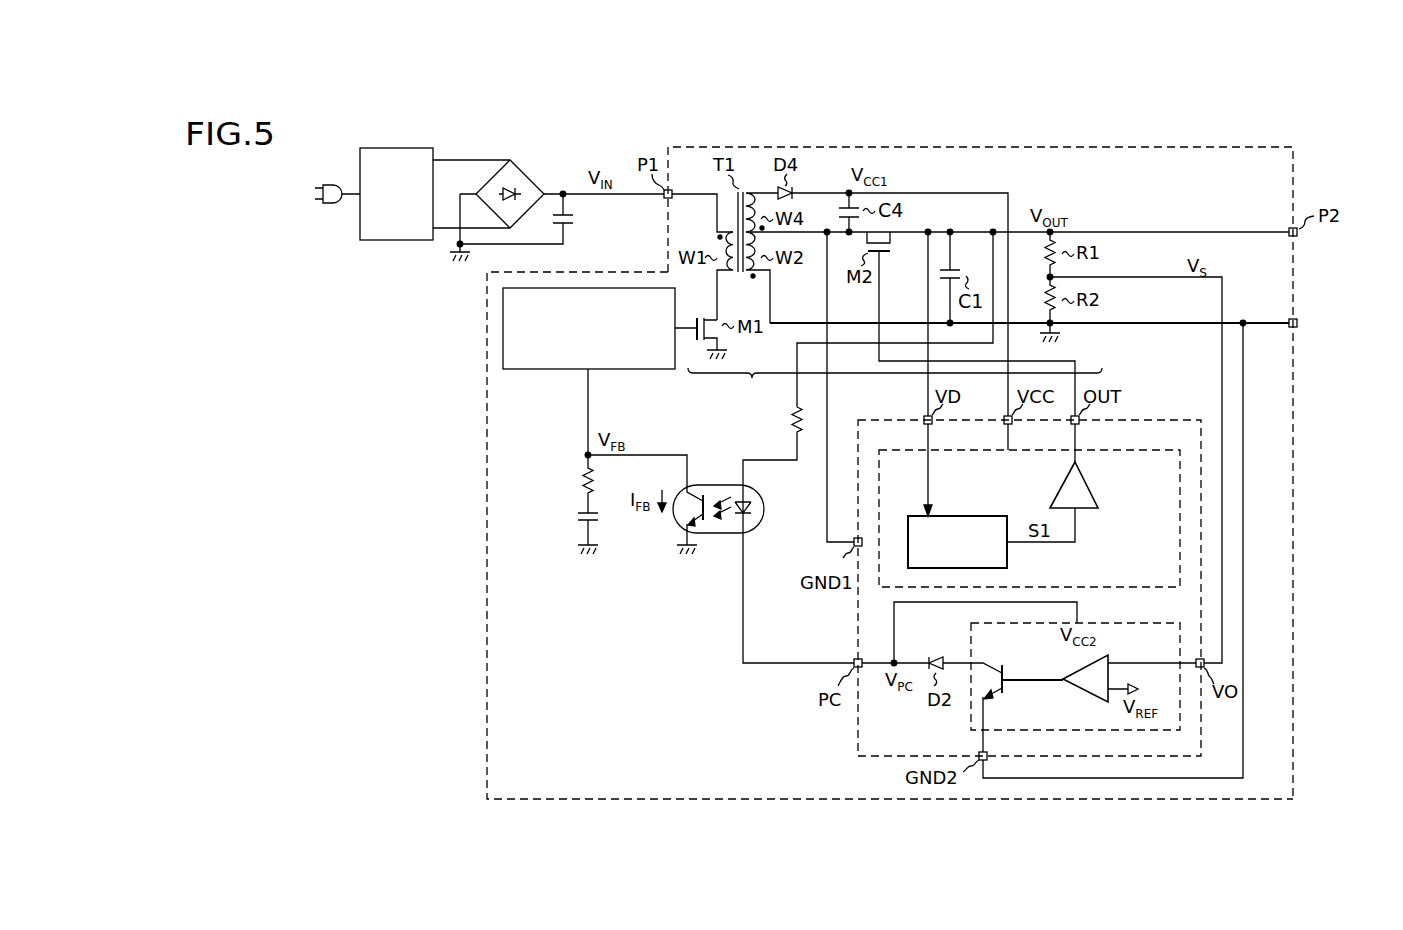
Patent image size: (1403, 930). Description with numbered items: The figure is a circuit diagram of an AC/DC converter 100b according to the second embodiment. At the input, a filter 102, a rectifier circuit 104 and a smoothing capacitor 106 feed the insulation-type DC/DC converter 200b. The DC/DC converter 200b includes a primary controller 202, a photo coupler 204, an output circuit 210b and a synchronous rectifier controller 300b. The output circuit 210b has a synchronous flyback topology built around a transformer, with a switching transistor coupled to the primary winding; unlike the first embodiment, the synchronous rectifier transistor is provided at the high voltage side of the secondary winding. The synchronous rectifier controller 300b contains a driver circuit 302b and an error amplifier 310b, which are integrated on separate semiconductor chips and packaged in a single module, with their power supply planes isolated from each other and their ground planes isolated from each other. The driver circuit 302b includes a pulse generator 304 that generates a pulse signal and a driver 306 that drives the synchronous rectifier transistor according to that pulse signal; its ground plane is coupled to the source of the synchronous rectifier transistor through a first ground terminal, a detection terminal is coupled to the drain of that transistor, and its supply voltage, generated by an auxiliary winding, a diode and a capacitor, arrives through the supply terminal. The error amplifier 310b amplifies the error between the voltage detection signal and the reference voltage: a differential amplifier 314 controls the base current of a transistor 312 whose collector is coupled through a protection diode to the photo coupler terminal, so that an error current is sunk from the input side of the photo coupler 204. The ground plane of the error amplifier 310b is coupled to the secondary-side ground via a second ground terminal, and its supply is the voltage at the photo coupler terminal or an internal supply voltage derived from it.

The AC/DC converter 100b is at (855, 829).
The filter 102 is at (390, 149).
The rectifier circuit 104 is at (528, 178).
The smoothing capacitor 106 is at (577, 220).
The DC/DC converter 200b is at (1032, 148).
The primary controller 202 is at (536, 371).
The photo coupler 204 is at (722, 483).
The output circuit 210b is at (895, 386).
The synchronous rectifier controller 300b is at (858, 748).
The driver circuit 302b is at (1118, 449).
The pulse generator 304 is at (972, 503).
The driver 306 is at (1061, 485).
The error amplifier 310b is at (1118, 620).
The transistor 312 is at (1008, 695).
The differential amplifier 314 is at (1078, 698).